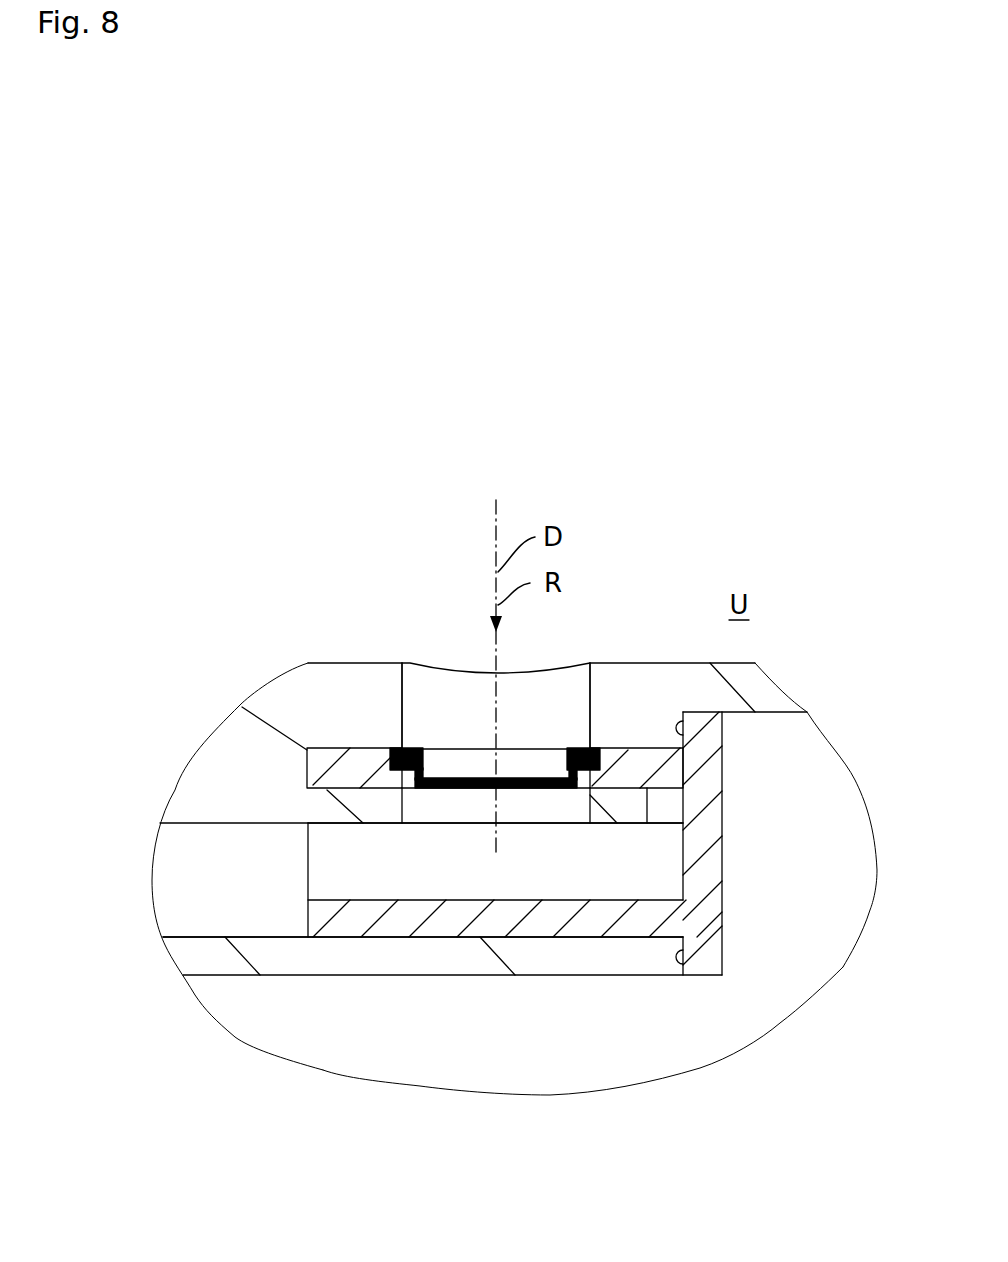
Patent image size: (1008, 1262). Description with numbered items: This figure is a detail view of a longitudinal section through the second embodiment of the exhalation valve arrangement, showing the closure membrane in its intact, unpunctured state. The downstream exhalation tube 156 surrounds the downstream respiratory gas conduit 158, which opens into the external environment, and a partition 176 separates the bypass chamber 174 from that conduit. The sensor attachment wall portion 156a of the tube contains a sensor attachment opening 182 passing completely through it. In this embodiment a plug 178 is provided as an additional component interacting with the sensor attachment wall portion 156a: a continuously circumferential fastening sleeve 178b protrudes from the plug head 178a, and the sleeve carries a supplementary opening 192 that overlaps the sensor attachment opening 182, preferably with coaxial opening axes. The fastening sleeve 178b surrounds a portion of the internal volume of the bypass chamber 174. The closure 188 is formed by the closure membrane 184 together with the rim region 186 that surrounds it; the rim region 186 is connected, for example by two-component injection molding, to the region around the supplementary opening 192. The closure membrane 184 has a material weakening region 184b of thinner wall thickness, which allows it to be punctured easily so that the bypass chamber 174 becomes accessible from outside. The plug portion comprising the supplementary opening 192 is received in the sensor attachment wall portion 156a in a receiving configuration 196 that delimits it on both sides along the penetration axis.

The downstream exhalation tube 156 is at (760, 683).
The sensor attachment wall portion 156a is at (271, 636).
The downstream respiratory gas conduit 158 is at (483, 1032).
The bypass chamber 174 is at (379, 878).
The partition 176 is at (208, 955).
The plug 178 is at (600, 801).
The plug head 178a is at (707, 872).
The fastening sleeve 178b is at (637, 762).
The sensor attachment opening 182 is at (543, 688).
The closure membrane 184 is at (454, 760).
The material weakening region 184b is at (492, 765).
The rim region 186 is at (398, 760).
The closure 188 is at (465, 612).
The supplementary opening 192 is at (396, 778).
The receiving configuration 196 is at (668, 773).